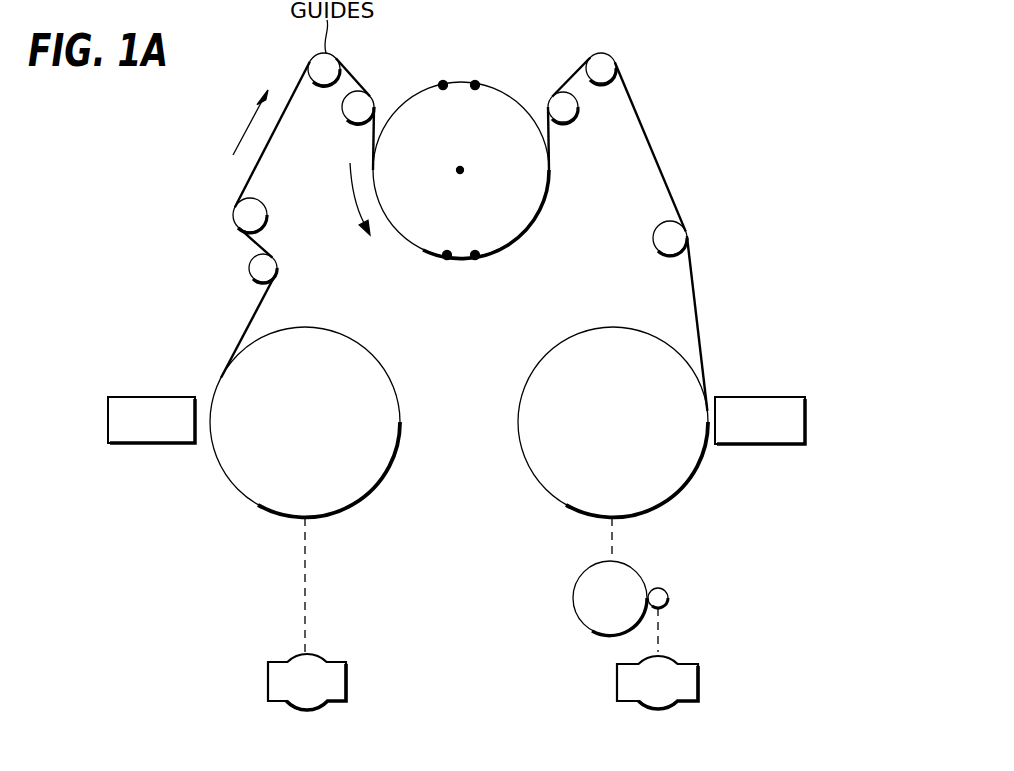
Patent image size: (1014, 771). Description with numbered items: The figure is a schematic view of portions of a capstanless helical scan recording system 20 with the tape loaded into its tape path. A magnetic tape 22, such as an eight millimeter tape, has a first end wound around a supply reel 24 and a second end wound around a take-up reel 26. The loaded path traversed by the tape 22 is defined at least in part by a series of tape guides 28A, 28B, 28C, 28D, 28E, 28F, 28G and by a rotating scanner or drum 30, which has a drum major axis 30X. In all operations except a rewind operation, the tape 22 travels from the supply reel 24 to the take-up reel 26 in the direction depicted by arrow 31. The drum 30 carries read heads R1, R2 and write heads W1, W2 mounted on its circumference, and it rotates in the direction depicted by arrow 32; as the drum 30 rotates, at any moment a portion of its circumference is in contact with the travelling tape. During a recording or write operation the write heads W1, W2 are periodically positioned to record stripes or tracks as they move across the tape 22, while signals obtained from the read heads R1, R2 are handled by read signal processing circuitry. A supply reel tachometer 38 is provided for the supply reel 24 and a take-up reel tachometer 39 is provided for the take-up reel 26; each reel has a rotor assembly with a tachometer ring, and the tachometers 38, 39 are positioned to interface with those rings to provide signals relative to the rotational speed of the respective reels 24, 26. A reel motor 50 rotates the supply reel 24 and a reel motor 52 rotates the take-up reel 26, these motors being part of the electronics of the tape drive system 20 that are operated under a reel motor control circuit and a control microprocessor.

The capstanless helical scan recording system 20 is at (715, 45).
The magnetic tape 22 is at (656, 151).
The supply reel 24 is at (388, 372).
The take-up reel 26 is at (582, 338).
The tape guide 28A is at (250, 270).
The tape guide 28B is at (234, 220).
The tape guide 28C is at (313, 58).
The tape guide 28D is at (360, 93).
The tape guide 28E is at (561, 92).
The tape guide 28F is at (606, 62).
The tape guide 28G is at (682, 240).
The drum 30 is at (536, 195).
The drum major axis 30X is at (460, 173).
The arrow 31 is at (243, 138).
The arrow 32 is at (351, 190).
The supply reel tachometer 38 is at (138, 397).
The take-up reel tachometer 39 is at (772, 397).
The reel motor 50 is at (335, 670).
The reel motor 52 is at (690, 673).
The read head R1 is at (443, 80).
The read head R2 is at (476, 80).
The write head W1 is at (474, 262).
The write head W2 is at (443, 260).